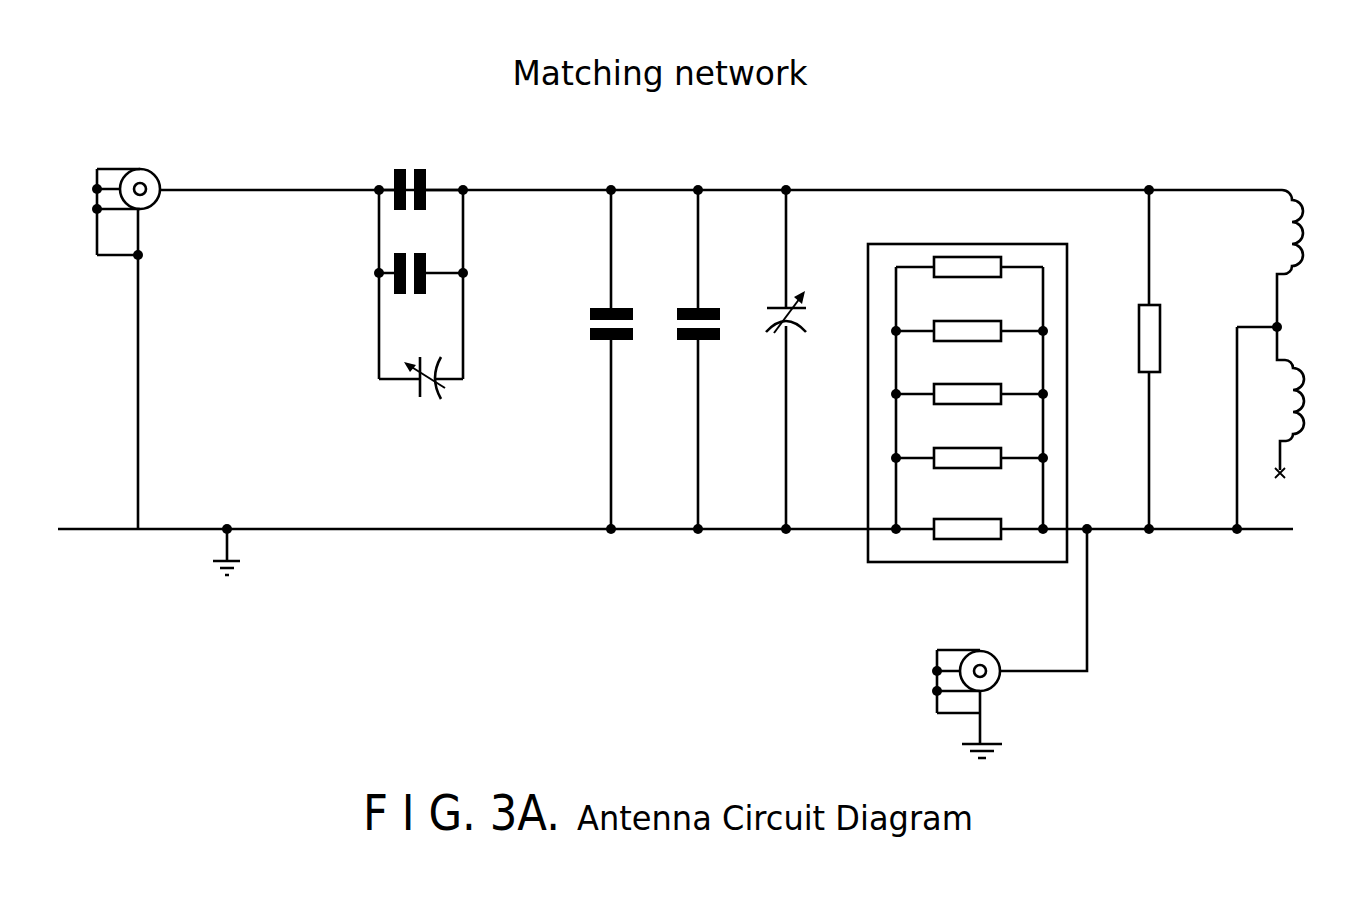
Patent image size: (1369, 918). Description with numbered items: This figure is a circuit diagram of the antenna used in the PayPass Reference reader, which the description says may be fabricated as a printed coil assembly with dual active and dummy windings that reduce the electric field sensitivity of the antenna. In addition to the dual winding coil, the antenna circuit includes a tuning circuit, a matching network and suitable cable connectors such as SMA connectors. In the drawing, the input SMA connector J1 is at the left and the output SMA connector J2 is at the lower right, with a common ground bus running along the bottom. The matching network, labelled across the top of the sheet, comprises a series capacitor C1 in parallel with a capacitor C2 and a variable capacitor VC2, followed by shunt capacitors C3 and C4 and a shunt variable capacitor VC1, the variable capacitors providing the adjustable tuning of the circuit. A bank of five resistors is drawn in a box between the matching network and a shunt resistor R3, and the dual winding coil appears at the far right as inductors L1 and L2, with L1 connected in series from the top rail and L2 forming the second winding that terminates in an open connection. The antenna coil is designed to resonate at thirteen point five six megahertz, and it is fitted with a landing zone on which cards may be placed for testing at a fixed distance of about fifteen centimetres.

The SMA connector J1 (antenna input) J1 is at (127, 313).
The capacitor C1 is at (421, 166).
The capacitor C2 is at (400, 284).
The variable capacitor VC2 is at (421, 399).
The capacitor C3 is at (611, 382).
The capacitor C4 is at (698, 382).
The variable capacitor VC1 is at (786, 334).
The resistor R3 is at (1130, 359).
The inductor L1 is at (1305, 258).
The inductor L2 is at (1284, 425).
The SMA connector J2 (output) J2 is at (999, 704).